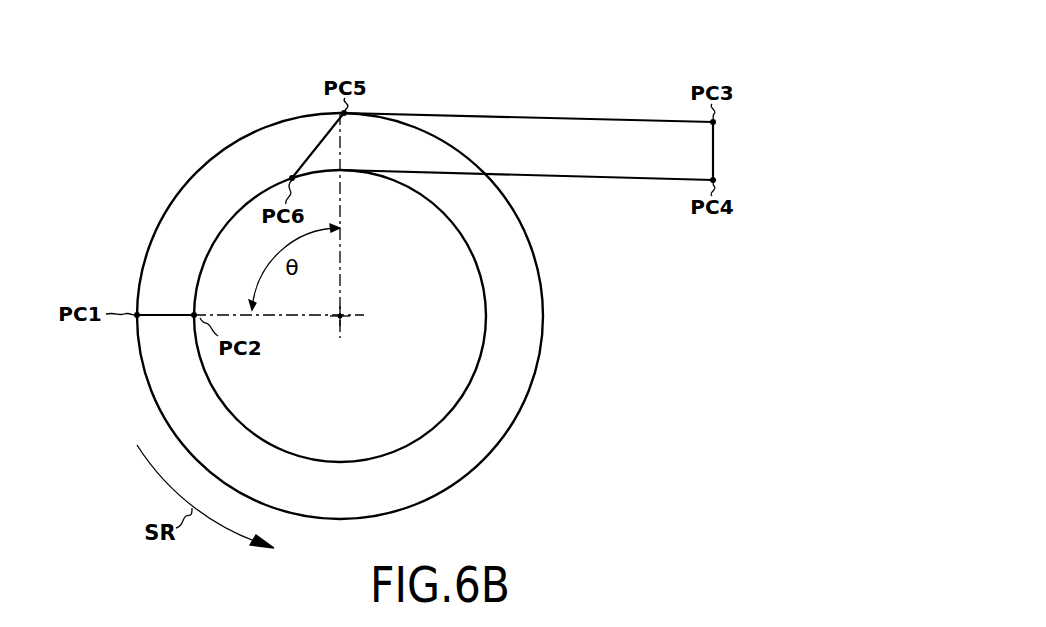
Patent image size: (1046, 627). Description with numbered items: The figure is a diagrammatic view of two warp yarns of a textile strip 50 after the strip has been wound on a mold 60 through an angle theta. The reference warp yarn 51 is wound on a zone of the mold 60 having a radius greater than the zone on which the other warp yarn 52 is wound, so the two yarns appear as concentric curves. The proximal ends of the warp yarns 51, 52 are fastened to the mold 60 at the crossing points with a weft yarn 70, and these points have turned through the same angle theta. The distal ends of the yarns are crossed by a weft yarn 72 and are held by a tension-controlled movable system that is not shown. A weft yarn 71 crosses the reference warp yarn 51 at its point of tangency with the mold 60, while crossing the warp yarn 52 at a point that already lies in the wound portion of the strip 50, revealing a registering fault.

The textile strip 50 is at (445, 281).
The reference warp yarn 51 is at (160, 218).
The warp yarn 52 is at (230, 218).
The mold 60 is at (517, 429).
The weft yarn 70 is at (166, 315).
The weft yarn 71 is at (304, 167).
The weft yarn 72 is at (715, 151).